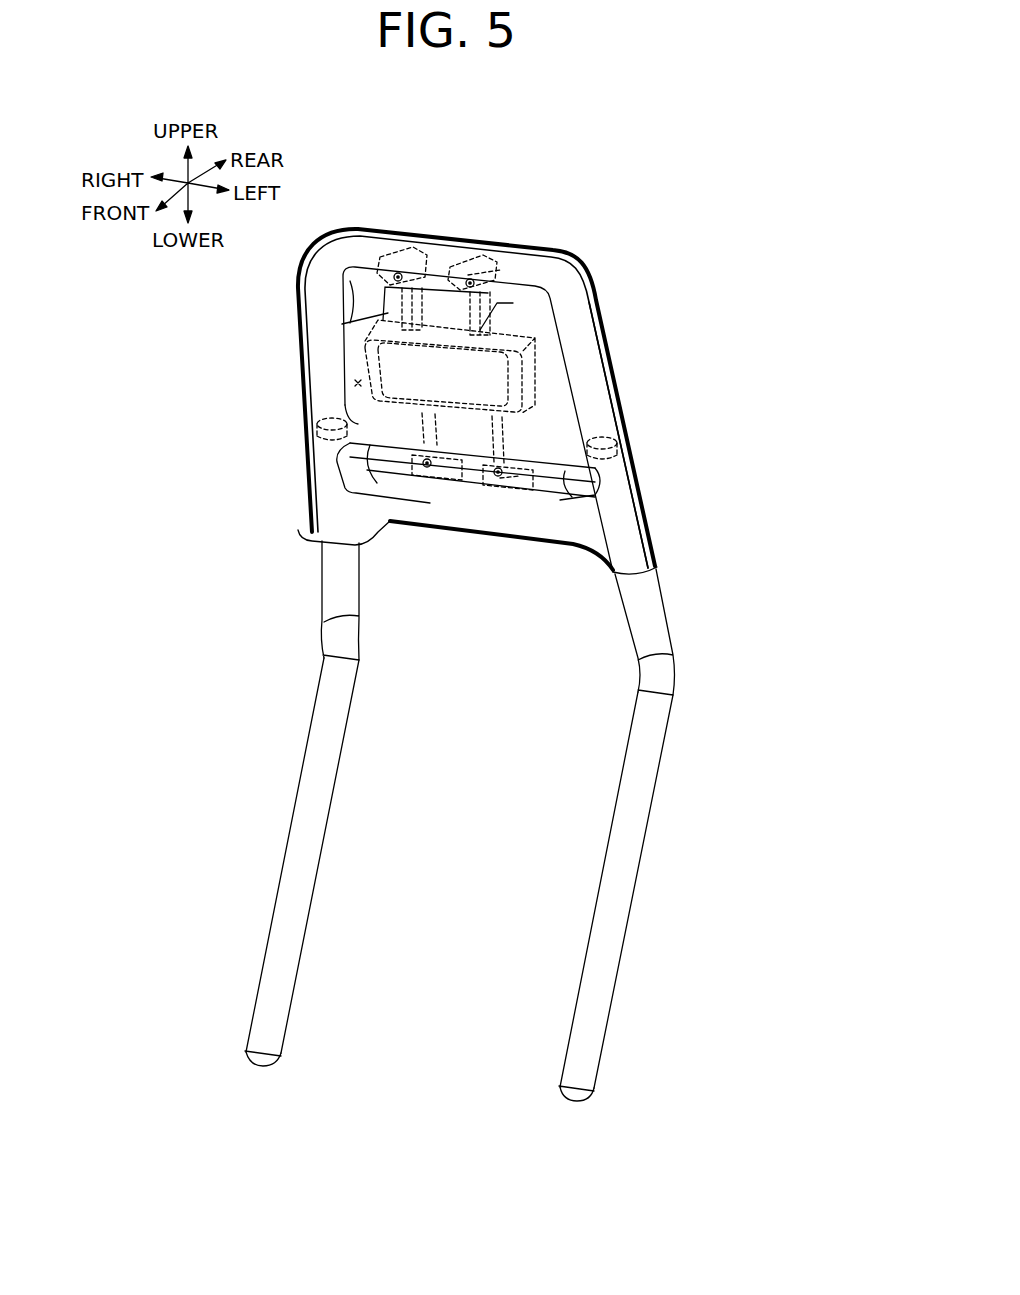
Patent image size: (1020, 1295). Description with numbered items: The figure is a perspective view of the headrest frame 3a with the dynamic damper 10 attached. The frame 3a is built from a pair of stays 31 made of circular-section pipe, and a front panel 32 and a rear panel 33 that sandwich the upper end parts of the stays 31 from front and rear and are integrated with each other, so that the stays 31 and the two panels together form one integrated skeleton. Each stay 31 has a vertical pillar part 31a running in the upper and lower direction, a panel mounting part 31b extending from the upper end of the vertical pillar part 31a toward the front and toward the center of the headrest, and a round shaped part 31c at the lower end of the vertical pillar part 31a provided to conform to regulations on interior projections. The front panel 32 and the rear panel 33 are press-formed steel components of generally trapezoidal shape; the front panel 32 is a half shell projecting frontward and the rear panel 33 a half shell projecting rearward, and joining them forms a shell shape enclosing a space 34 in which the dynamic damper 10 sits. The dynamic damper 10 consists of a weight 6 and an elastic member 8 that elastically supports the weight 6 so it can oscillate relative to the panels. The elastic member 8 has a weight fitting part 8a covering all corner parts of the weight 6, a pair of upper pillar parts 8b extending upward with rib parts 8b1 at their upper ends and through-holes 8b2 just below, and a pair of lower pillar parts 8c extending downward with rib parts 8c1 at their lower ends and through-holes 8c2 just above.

The frame 3a is at (613, 265).
The weight 6 is at (347, 433).
The elastic member 8 is at (524, 380).
The weight fitting part 8a is at (540, 376).
The upper pillar parts 8b is at (529, 249).
The rib parts 8b1 is at (486, 262).
The through-holes 8b2 is at (467, 279).
The lower pillar parts 8c is at (508, 492).
The rib parts 8c1 is at (508, 486).
The through-holes 8c2 is at (497, 477).
The dynamic damper 10 is at (360, 356).
The stays 31 is at (498, 859).
The vertical pillar part 31a is at (320, 826).
The panel mounting part 31b is at (332, 588).
The round shaped part 31c is at (261, 1063).
The front panel 32 is at (330, 402).
The rear panel 33 is at (636, 467).
The space 34 is at (354, 383).